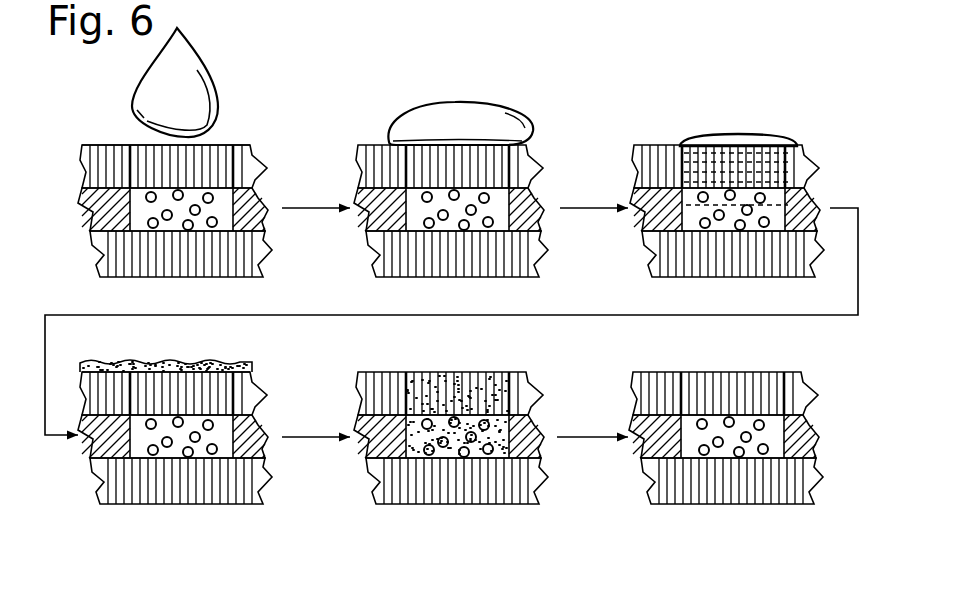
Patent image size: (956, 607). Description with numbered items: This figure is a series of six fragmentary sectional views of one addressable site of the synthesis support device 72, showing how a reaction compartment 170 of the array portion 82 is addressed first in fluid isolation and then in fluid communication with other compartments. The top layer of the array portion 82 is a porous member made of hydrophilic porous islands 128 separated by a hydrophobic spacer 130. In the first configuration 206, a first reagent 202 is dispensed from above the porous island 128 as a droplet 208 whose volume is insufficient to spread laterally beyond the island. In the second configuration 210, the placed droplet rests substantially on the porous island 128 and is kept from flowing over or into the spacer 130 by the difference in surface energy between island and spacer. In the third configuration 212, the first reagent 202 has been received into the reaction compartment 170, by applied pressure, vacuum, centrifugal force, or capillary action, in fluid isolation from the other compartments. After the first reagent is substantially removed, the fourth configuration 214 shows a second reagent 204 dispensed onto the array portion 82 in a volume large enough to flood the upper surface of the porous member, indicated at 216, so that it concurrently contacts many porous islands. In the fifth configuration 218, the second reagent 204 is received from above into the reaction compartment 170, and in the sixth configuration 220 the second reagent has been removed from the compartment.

The synthesis support device 72 is at (143, 286).
The array portion 82 is at (154, 286).
The porous island 128 is at (138, 147).
The spacer 130 is at (372, 152).
The reaction compartment 170 is at (105, 132).
The first reagent 202 is at (197, 83).
The second reagent 204 is at (157, 368).
The first configuration 206 is at (233, 130).
The droplet 208 is at (184, 37).
The second configuration 210 is at (515, 99).
The third configuration 212 is at (772, 131).
The fourth configuration 214 is at (213, 345).
The flooded upper surface 216 is at (250, 363).
The fifth configuration 218 is at (482, 380).
The sixth configuration 220 is at (733, 365).